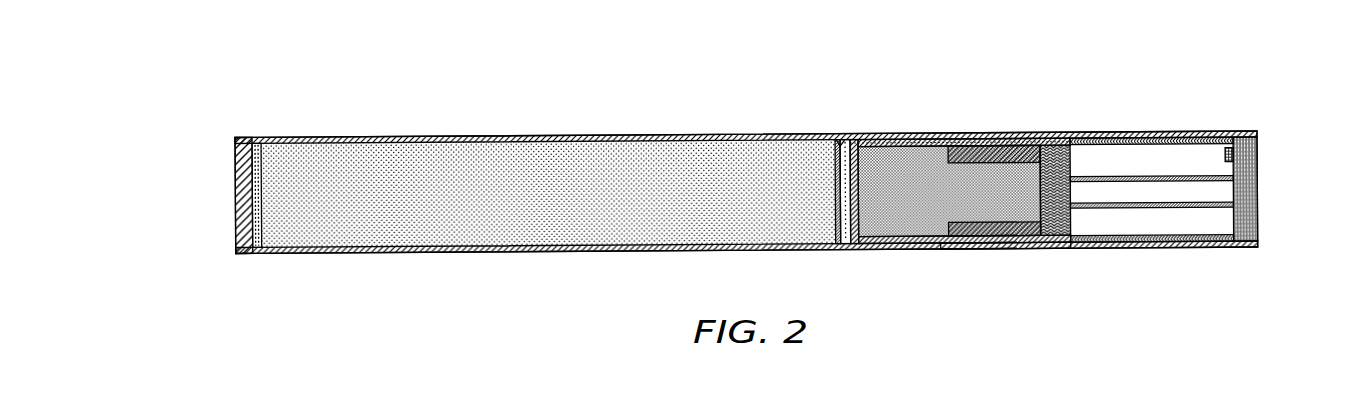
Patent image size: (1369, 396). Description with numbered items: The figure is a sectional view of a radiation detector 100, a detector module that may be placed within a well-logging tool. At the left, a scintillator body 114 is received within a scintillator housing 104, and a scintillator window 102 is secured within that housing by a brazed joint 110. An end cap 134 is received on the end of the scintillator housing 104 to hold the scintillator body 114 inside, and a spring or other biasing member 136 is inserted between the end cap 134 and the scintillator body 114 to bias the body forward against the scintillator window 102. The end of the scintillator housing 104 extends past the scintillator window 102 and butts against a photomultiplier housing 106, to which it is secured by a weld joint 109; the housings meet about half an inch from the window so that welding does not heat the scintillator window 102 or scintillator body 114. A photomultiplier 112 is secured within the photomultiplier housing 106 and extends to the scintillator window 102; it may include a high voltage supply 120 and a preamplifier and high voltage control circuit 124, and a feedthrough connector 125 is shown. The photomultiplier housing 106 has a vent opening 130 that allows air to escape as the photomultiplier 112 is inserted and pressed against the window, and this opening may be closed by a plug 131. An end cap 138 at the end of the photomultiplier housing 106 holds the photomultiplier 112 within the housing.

The radiation detector 100 is at (730, 96).
The scintillator window 102 is at (845, 236).
The scintillator housing 104 is at (540, 135).
The photomultiplier housing 106 is at (1133, 132).
The weld joint 109 is at (890, 136).
The brazed joint 110 is at (840, 143).
The photomultiplier 112 is at (921, 158).
The scintillator body 114 is at (342, 158).
The high voltage supply 120 is at (1049, 148).
The preamplifier and high voltage control circuit 124 is at (1122, 207).
The feedthrough connector 125 is at (1258, 152).
The vent opening 130 is at (1005, 252).
The plug 131 is at (993, 250).
The end cap 134 is at (236, 240).
The spring or other biasing member 136 is at (253, 142).
The end cap 138 is at (1256, 223).